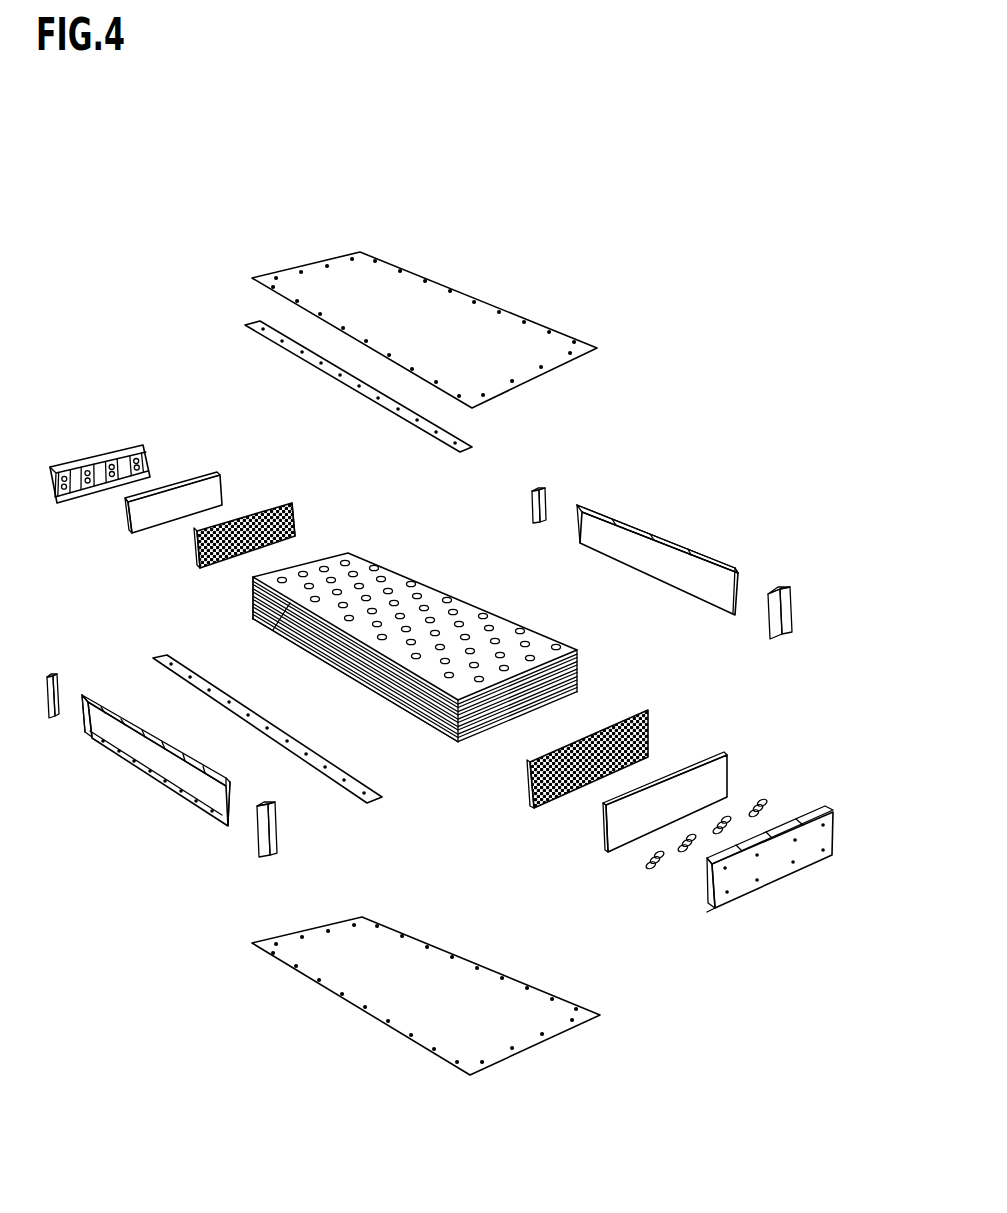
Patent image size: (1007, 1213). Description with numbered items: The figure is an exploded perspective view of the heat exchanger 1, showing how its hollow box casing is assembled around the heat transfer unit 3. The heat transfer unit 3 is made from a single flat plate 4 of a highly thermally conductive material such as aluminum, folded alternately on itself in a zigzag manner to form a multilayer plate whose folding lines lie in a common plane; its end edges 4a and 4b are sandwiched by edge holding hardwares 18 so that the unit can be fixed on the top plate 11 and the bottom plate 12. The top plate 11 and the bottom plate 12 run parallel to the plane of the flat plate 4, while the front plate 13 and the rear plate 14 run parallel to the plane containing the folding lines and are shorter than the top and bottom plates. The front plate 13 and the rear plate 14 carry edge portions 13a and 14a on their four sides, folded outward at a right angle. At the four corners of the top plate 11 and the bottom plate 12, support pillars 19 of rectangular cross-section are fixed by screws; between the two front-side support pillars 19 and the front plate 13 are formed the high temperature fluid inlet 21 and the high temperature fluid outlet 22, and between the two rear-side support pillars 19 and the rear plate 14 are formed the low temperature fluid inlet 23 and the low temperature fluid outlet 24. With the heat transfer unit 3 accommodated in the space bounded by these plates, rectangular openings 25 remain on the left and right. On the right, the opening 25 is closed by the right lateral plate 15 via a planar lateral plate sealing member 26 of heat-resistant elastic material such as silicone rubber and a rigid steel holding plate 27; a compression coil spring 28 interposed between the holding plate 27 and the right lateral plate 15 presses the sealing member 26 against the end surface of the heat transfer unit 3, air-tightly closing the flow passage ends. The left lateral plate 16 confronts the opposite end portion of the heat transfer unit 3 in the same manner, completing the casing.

The heat exchanger 1 is at (650, 208).
The heat transfer unit 3 is at (357, 600).
The flat plate 4 is at (357, 643).
The end edge 4a is at (268, 627).
The end edge 4b is at (397, 709).
The top plate 11 is at (452, 310).
The bottom plate 12 is at (530, 1005).
The front plate 13 is at (155, 822).
The edge portion 13a is at (152, 737).
The rear plate 14 is at (661, 506).
The edge portion 14a is at (618, 518).
The right lateral plate 15 is at (807, 813).
The left lateral plate 16 is at (112, 448).
The edge holding hardware 18 is at (472, 447).
The support pillar 19 is at (52, 673).
The high temperature fluid inlet 21 is at (243, 830).
The high temperature fluid outlet 22 is at (70, 713).
The low temperature fluid inlet 23 is at (562, 507).
The low temperature fluid outlet 24 is at (758, 577).
The opening 25 is at (220, 577).
The lateral plate sealing member 26 is at (288, 503).
The holding plate 27 is at (210, 477).
The spring 28 is at (648, 862).